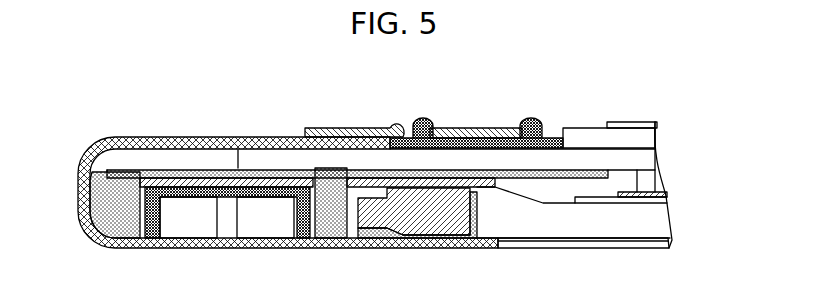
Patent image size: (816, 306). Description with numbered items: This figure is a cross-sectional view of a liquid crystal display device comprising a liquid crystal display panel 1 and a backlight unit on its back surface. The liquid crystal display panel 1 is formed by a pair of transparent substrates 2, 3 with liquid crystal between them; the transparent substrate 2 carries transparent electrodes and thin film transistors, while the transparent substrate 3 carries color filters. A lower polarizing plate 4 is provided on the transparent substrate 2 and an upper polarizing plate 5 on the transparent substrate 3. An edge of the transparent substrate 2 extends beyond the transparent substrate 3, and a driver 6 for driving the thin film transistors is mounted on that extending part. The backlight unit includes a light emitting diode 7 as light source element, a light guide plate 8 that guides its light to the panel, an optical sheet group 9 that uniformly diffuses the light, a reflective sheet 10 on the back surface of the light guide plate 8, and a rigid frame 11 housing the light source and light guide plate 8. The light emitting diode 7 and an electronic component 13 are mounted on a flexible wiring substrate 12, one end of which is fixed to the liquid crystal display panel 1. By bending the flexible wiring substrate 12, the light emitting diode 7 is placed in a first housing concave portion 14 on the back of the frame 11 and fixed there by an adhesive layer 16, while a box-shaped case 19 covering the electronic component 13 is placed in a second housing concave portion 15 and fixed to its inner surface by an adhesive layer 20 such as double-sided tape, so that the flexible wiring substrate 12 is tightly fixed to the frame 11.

The liquid crystal display panel 1 is at (662, 128).
The transparent substrate 2 is at (550, 157).
The transparent substrate 3 is at (587, 138).
The lower polarizing plate 4 is at (648, 182).
The upper polarizing plate 5 is at (628, 122).
The driver 6 is at (475, 131).
The light emitting diode 7 is at (443, 228).
The light guide plate 8 is at (605, 227).
The optical sheet group 9 is at (662, 197).
The reflective sheet 10 is at (557, 243).
The frame 11 is at (122, 227).
The flexible wiring substrate 12 is at (120, 138).
The electronic component 13 is at (253, 227).
The first housing concave portion 14 is at (372, 233).
The second housing concave portion 15 is at (308, 248).
The adhesive layer 16 is at (367, 180).
The case 19 is at (148, 240).
The adhesive layer 20 is at (177, 178).